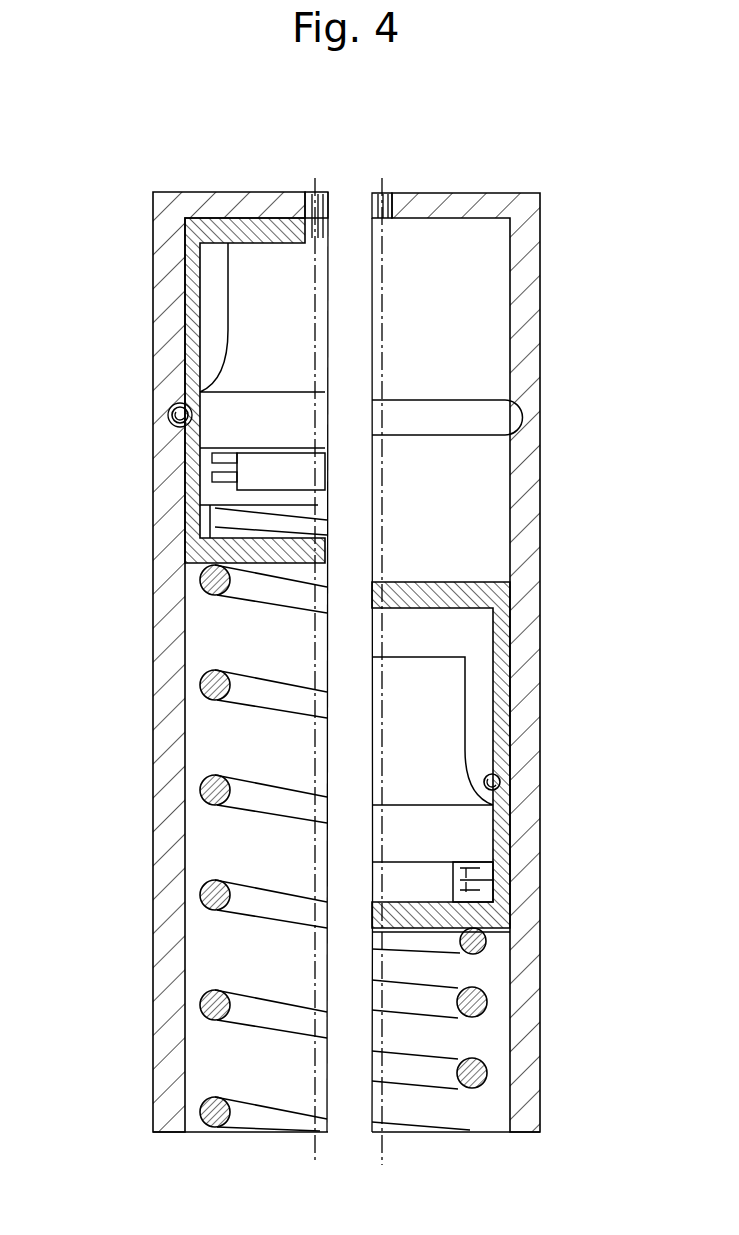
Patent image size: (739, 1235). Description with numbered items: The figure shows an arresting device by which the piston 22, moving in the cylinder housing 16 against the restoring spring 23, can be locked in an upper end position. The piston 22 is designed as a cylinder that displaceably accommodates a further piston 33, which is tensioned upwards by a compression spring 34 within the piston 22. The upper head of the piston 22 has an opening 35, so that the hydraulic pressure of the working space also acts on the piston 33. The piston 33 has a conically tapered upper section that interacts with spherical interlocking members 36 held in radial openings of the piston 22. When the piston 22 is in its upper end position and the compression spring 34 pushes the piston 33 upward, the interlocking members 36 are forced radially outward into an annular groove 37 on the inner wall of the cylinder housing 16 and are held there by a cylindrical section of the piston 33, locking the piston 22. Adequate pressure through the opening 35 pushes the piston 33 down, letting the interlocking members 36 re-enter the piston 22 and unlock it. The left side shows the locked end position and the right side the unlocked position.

The cylinder housing 16 is at (168, 1025).
The piston 22 is at (190, 304).
The restoring spring 23 is at (210, 685).
The piston 33 is at (242, 270).
The compression spring 34 is at (215, 506).
The opening 35 is at (320, 227).
The interlocking members 36 is at (180, 410).
The annular groove 37 is at (200, 432).